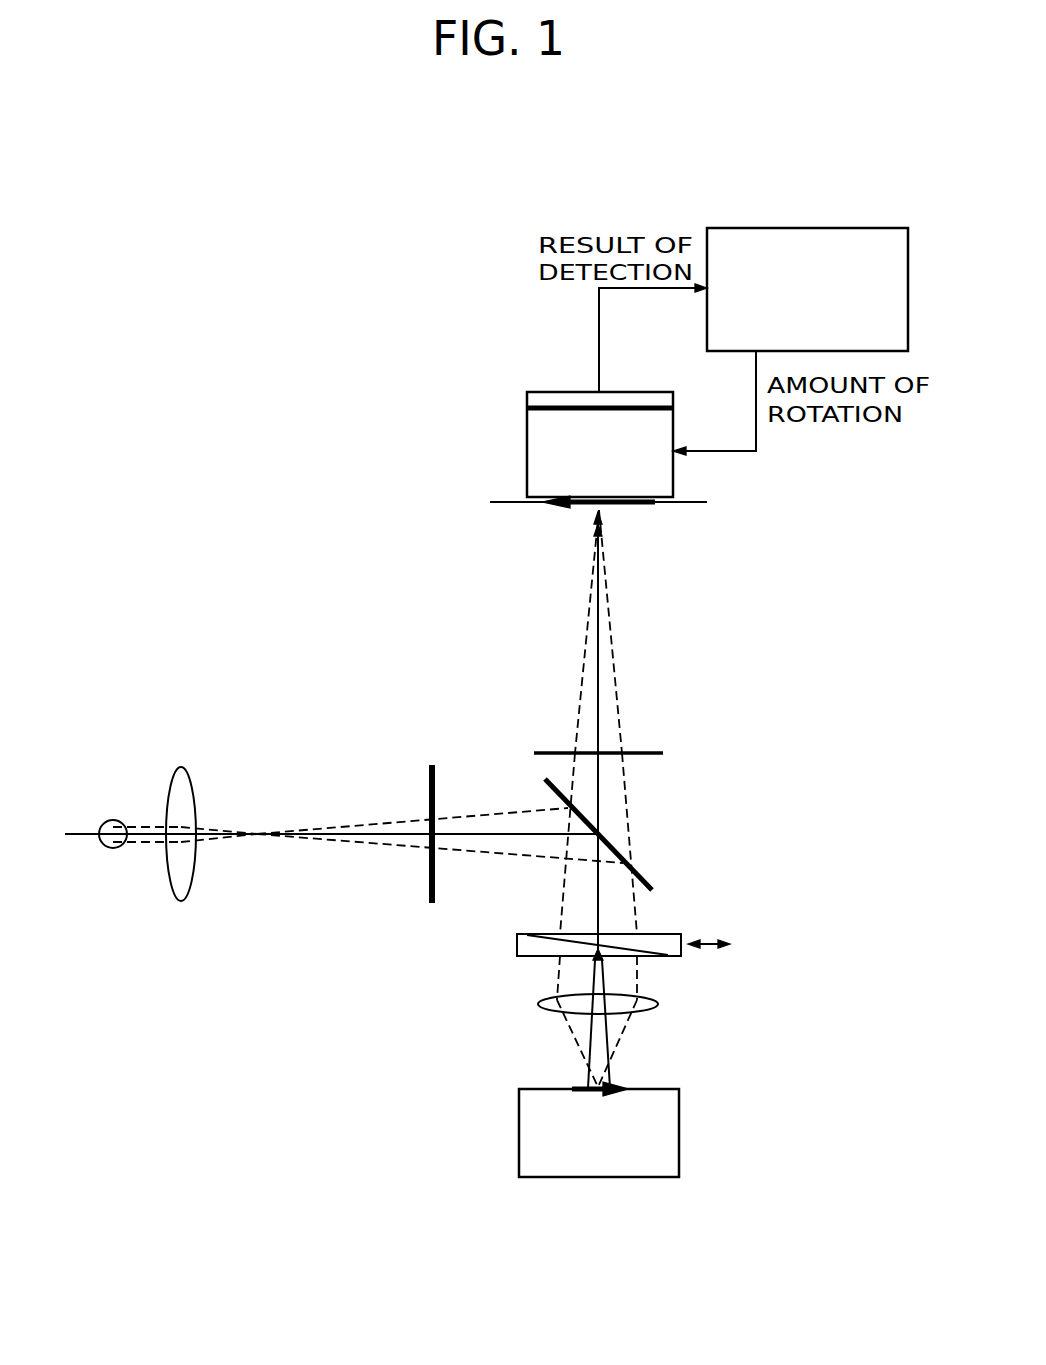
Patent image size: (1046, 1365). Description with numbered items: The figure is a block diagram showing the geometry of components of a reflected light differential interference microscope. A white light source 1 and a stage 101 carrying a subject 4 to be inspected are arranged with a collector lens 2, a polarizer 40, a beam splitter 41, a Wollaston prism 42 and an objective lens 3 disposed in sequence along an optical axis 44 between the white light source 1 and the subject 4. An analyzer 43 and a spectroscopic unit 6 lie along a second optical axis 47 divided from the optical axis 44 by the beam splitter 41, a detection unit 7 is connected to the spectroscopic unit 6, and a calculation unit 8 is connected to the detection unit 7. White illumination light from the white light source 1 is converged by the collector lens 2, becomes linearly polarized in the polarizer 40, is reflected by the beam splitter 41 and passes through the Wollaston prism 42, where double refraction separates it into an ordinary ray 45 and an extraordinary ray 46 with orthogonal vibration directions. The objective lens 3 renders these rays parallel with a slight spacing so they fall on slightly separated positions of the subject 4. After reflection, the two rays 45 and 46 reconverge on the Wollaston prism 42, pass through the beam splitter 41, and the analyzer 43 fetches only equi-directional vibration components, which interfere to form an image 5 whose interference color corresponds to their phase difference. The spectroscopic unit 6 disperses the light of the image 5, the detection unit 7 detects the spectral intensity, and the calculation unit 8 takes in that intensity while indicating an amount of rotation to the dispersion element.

The white light source 1 is at (115, 820).
The collector lens 2 is at (182, 767).
The objective lens 3 is at (660, 1007).
The subject 4 is at (620, 1082).
The image 5 is at (632, 508).
The spectroscopic unit 6 is at (527, 450).
The detection unit 7 is at (527, 398).
The calculation unit 8 is at (855, 226).
The polarizer 40 is at (427, 787).
The beam splitter 41 is at (648, 877).
The Wollaston prism 42 is at (667, 933).
The analyzer 43 is at (648, 752).
The optical axis 44 is at (357, 830).
The ordinary ray 45 is at (593, 980).
The extraordinary ray 46 is at (607, 980).
The optical axis 47 is at (600, 623).
The stage 101 is at (680, 1098).